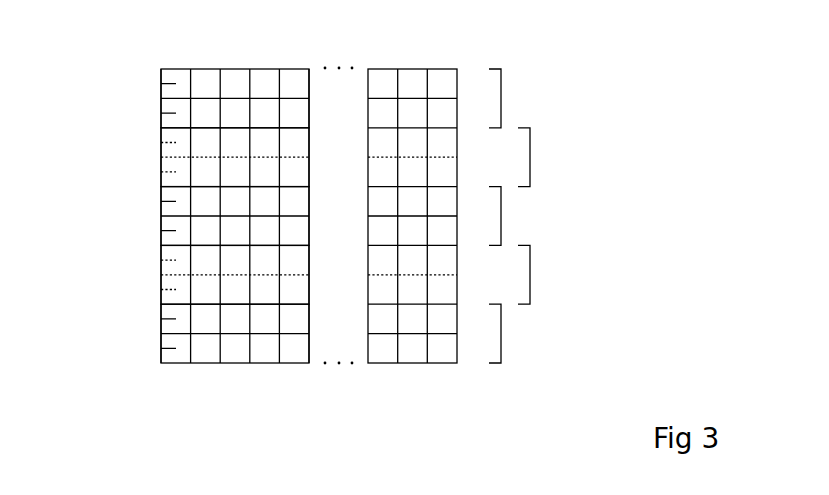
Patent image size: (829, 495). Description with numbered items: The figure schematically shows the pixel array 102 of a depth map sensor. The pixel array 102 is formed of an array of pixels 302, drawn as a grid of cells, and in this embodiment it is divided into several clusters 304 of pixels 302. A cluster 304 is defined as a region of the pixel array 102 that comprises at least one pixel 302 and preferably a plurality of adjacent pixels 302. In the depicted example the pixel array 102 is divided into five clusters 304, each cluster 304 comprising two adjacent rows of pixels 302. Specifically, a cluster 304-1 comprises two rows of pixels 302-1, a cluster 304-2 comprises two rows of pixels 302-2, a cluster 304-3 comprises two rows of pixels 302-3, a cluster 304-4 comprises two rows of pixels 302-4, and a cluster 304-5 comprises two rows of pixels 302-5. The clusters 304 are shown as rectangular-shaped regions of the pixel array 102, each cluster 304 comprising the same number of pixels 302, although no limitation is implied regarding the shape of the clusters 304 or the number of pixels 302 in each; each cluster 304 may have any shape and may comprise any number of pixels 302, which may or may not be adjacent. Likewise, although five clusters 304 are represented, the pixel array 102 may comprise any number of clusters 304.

The pixel array 102 is at (436, 55).
The pixels 302 is at (233, 384).
The rows of pixels 302-1 is at (161, 113).
The rows of pixels 302-2 is at (161, 172).
The rows of pixels 302-3 is at (161, 231).
The rows of pixels 302-4 is at (161, 290).
The rows of pixels 302-5 is at (161, 348).
The clusters 304 is at (624, 202).
The cluster 304-1 is at (523, 98).
The cluster 304-2 is at (552, 157).
The cluster 304-3 is at (523, 216).
The cluster 304-4 is at (552, 274).
The cluster 304-5 is at (523, 333).